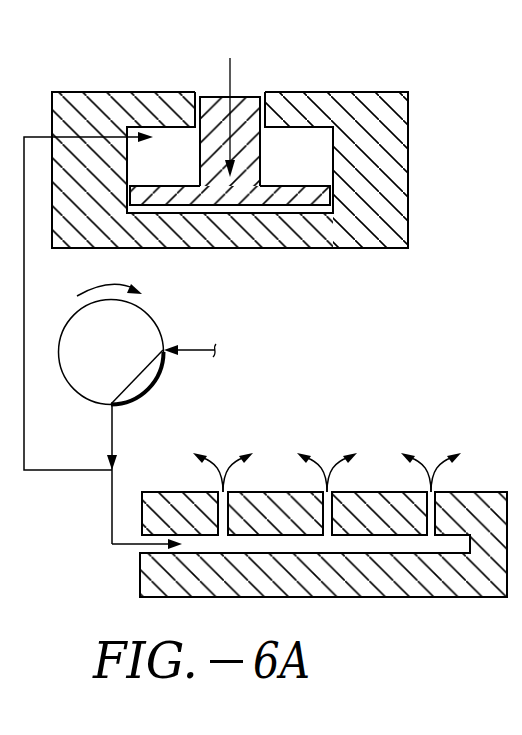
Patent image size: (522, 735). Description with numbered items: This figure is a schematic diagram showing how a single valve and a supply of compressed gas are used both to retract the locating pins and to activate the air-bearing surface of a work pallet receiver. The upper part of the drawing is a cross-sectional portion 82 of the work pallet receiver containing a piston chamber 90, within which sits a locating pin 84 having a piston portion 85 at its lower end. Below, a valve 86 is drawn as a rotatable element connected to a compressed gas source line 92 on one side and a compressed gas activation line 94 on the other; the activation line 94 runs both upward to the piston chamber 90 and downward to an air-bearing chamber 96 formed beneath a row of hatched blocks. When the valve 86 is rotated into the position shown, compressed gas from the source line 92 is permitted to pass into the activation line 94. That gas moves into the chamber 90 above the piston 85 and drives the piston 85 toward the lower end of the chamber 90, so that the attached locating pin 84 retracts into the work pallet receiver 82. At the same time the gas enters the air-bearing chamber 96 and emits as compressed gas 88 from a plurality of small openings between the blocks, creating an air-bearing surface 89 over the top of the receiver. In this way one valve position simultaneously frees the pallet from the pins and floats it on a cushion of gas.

The cross-sectional portion of the work pallet receiver 82 is at (360, 112).
The locating pin 84 is at (249, 96).
The piston portion 85 is at (302, 197).
The valve 86 is at (118, 328).
The compressed gas emitting from small openings 88 is at (224, 460).
The air-bearing surface 89 is at (273, 492).
The piston chamber 90 is at (166, 147).
The compressed gas source line 92 is at (193, 352).
The compressed gas activation line 94 is at (24, 277).
The air-bearing chamber 96 is at (218, 545).